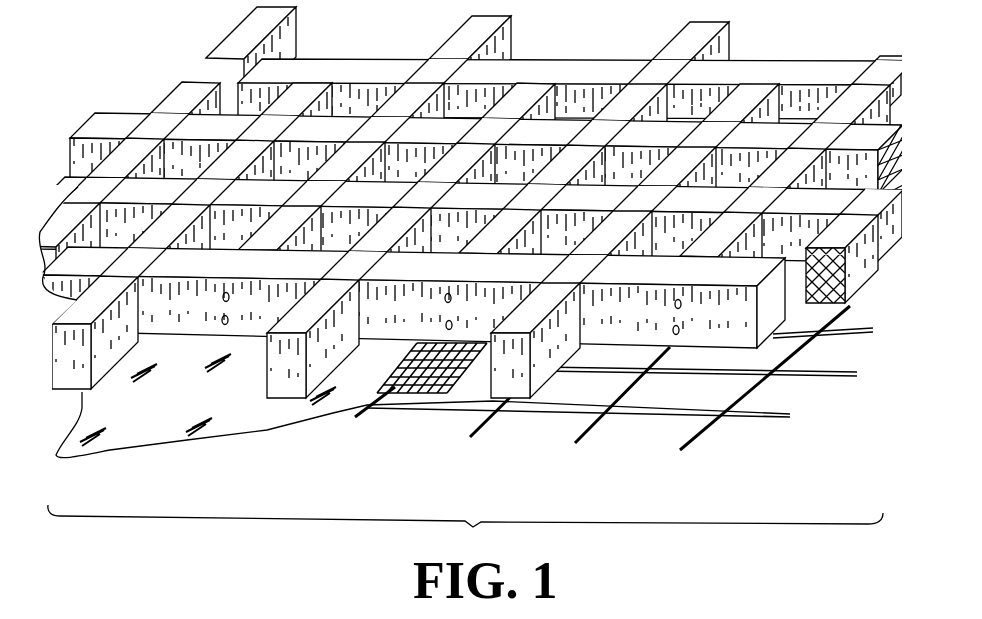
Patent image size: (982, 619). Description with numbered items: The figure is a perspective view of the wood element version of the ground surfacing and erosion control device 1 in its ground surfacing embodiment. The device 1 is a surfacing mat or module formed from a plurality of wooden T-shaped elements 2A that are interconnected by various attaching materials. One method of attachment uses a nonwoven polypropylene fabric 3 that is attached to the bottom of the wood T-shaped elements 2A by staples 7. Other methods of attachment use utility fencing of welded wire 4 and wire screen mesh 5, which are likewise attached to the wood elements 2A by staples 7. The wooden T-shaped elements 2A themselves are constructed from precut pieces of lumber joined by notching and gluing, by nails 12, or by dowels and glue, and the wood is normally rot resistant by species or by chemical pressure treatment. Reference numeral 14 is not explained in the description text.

The ground surfacing and erosion control device 1 is at (468, 216).
The wooden T-shaped elements 2A is at (187, 327).
The nonwoven polypropylene fabric 3 is at (145, 433).
The utility fencing of welded wire 4 is at (590, 425).
The wire screen mesh 5 is at (400, 393).
The staples 7 is at (511, 432).
The nails 12 is at (226, 323).
The rear beam 14 is at (812, 108).